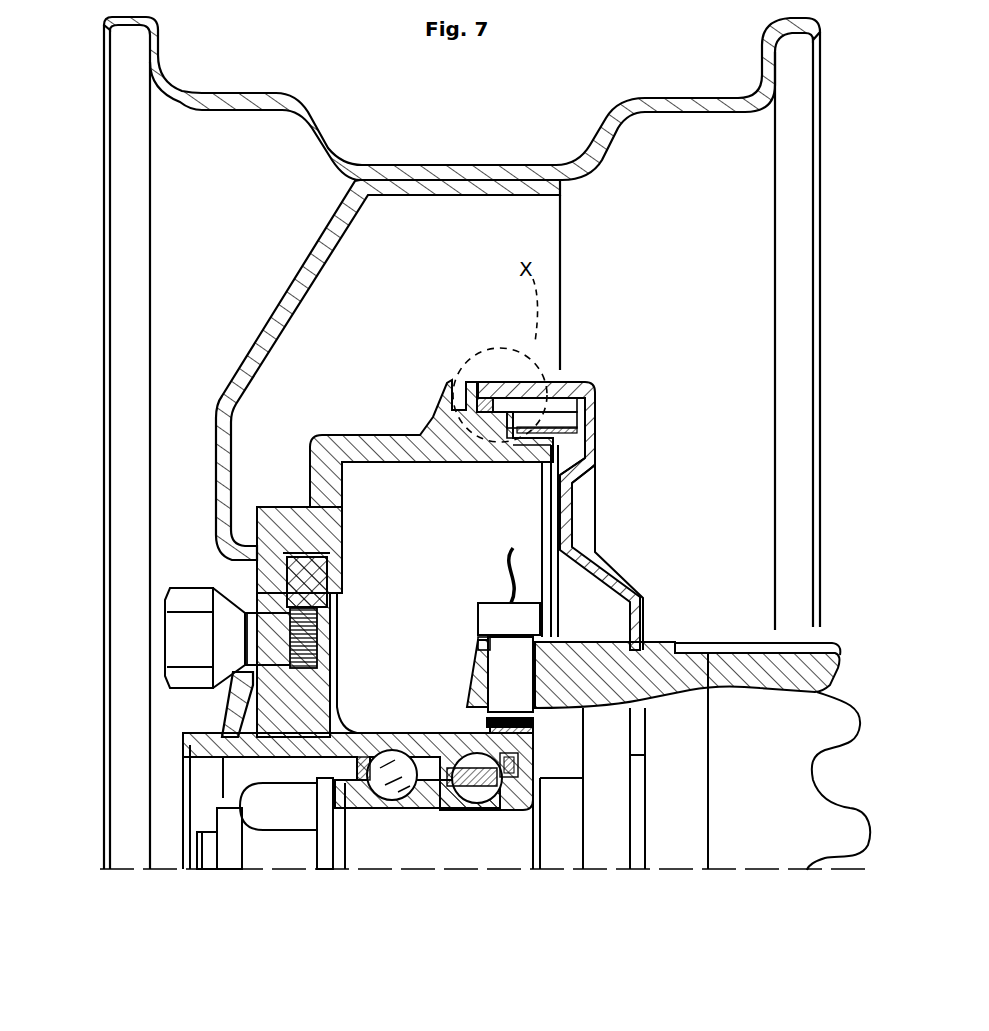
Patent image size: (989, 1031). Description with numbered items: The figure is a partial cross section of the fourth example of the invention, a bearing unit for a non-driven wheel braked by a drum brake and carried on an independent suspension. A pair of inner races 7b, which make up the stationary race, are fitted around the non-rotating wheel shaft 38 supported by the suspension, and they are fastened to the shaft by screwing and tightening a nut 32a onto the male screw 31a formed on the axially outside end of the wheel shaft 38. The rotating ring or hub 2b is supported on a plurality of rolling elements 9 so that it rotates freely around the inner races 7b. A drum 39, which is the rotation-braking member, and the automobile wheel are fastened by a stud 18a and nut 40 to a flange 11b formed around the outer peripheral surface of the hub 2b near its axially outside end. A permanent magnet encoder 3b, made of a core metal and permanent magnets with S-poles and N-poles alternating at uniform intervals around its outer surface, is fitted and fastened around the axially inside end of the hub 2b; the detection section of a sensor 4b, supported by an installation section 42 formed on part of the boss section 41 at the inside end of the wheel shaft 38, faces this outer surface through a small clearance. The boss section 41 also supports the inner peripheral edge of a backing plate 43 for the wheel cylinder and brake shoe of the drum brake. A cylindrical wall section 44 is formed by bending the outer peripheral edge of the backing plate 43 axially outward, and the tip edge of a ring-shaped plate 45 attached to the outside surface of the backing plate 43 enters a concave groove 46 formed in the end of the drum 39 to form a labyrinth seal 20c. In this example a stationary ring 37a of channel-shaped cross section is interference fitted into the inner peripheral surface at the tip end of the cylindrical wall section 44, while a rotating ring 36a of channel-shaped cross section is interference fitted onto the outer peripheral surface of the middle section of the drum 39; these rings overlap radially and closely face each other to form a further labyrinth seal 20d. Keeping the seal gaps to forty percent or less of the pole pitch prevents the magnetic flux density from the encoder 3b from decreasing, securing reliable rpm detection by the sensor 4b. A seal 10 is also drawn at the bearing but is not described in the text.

The hub 2b is at (307, 723).
The flange 11b is at (297, 583).
The stud 18a is at (290, 640).
The nut 40 is at (190, 648).
The drum 39 is at (370, 447).
The labyrinth seal 20d is at (458, 376).
The rotating ring 36a is at (480, 450).
The cylindrical wall section 44 is at (523, 388).
The backing plate 43 is at (593, 470).
The ring-shaped plate 45 is at (597, 457).
The stationary ring 37a is at (497, 399).
The labyrinth seal 20c is at (520, 421).
The concave groove 46 is at (517, 470).
The sensor 4b is at (525, 622).
The installation section 42 is at (470, 650).
The boss section 41 is at (697, 832).
The permanent magnet encoder 3b is at (535, 722).
The inner races 7b is at (370, 807).
The rolling elements 9 is at (393, 770).
The seal 10 is at (417, 810).
The wheel shaft 38 is at (485, 847).
The male screw 31a is at (210, 850).
The nut 32a is at (292, 845).